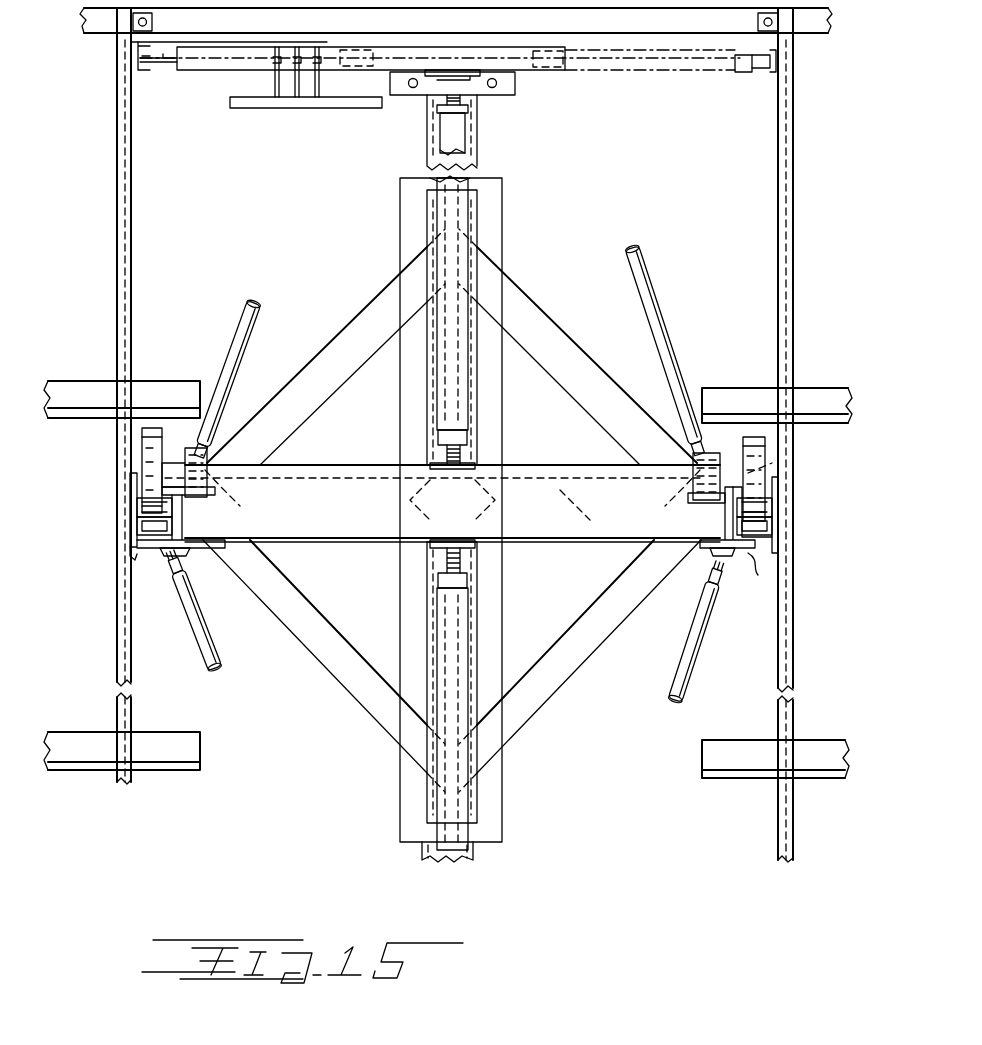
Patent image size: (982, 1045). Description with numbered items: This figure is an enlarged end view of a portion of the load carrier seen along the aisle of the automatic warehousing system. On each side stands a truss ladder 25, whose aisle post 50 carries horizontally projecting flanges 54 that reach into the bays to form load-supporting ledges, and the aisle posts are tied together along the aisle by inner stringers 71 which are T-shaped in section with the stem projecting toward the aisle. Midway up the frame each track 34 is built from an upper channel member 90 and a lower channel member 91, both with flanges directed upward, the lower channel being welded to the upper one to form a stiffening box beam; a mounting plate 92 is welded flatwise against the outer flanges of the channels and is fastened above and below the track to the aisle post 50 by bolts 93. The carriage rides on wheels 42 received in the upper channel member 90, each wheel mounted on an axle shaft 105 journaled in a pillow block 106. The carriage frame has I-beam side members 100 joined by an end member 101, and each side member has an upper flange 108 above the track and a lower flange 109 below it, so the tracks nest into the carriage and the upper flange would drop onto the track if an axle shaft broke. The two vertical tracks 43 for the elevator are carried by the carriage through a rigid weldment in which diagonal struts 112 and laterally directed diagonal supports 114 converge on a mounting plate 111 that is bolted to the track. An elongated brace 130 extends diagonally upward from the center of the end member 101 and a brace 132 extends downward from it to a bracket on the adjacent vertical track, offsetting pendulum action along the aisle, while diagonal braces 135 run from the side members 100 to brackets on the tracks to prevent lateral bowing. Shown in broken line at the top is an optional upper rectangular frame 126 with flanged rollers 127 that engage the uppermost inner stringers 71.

The truss ladder 25 is at (673, 22).
The track 34 is at (160, 556).
The wheel 42 is at (152, 428).
The vertical track 43 is at (477, 127).
The aisle post 50 is at (122, 150).
The horizontal flange 54 is at (78, 373).
The inner stringer 71 is at (140, 70).
The upper channel member 90 is at (137, 504).
The lower channel member 91 is at (137, 527).
The mounting plate 92 is at (130, 484).
The bolt 93 is at (130, 553).
The side member 100 is at (773, 490).
The end member 101 is at (570, 525).
The axle shaft 105 is at (345, 478).
The pillow block 106 is at (240, 470).
The upper flange 108 is at (772, 463).
The lower flange 109 is at (752, 572).
The mounting plate 111 is at (400, 228).
The diagonal strut 112 is at (477, 206).
The laterally directed diagonal support 114 is at (358, 322).
The upper rectangular frame 126 is at (660, 67).
The flanged roller 127 is at (752, 72).
The brace 130 is at (437, 412).
The brace 132 is at (440, 747).
The diagonal brace 135 is at (246, 318).